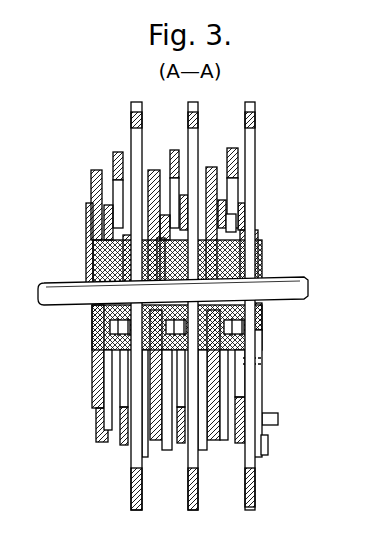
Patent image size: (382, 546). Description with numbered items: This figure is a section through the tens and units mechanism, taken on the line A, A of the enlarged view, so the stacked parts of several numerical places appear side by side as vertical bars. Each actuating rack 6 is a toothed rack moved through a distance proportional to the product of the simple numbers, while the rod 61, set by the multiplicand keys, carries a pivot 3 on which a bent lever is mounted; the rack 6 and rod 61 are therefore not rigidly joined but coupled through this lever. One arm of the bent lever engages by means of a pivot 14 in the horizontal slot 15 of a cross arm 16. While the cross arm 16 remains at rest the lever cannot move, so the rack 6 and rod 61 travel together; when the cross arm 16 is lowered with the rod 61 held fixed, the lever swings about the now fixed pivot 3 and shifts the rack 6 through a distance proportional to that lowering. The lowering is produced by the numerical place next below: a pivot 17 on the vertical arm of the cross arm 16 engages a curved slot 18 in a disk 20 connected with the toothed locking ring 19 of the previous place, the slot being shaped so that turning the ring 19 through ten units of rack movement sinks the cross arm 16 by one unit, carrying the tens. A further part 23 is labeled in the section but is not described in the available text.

The pivot 3 is at (268, 443).
The actuating rack 6 is at (262, 351).
The sliding rod 61 is at (257, 486).
The pivot 14 is at (245, 420).
The horizontal slot 15 is at (100, 423).
The cross arm 16 is at (212, 186).
The pivot 17 is at (262, 322).
The curved slot 18 is at (228, 223).
The toothed locking ring 19 is at (238, 156).
The disk 20 is at (257, 241).
The pin 23 is at (255, 116).